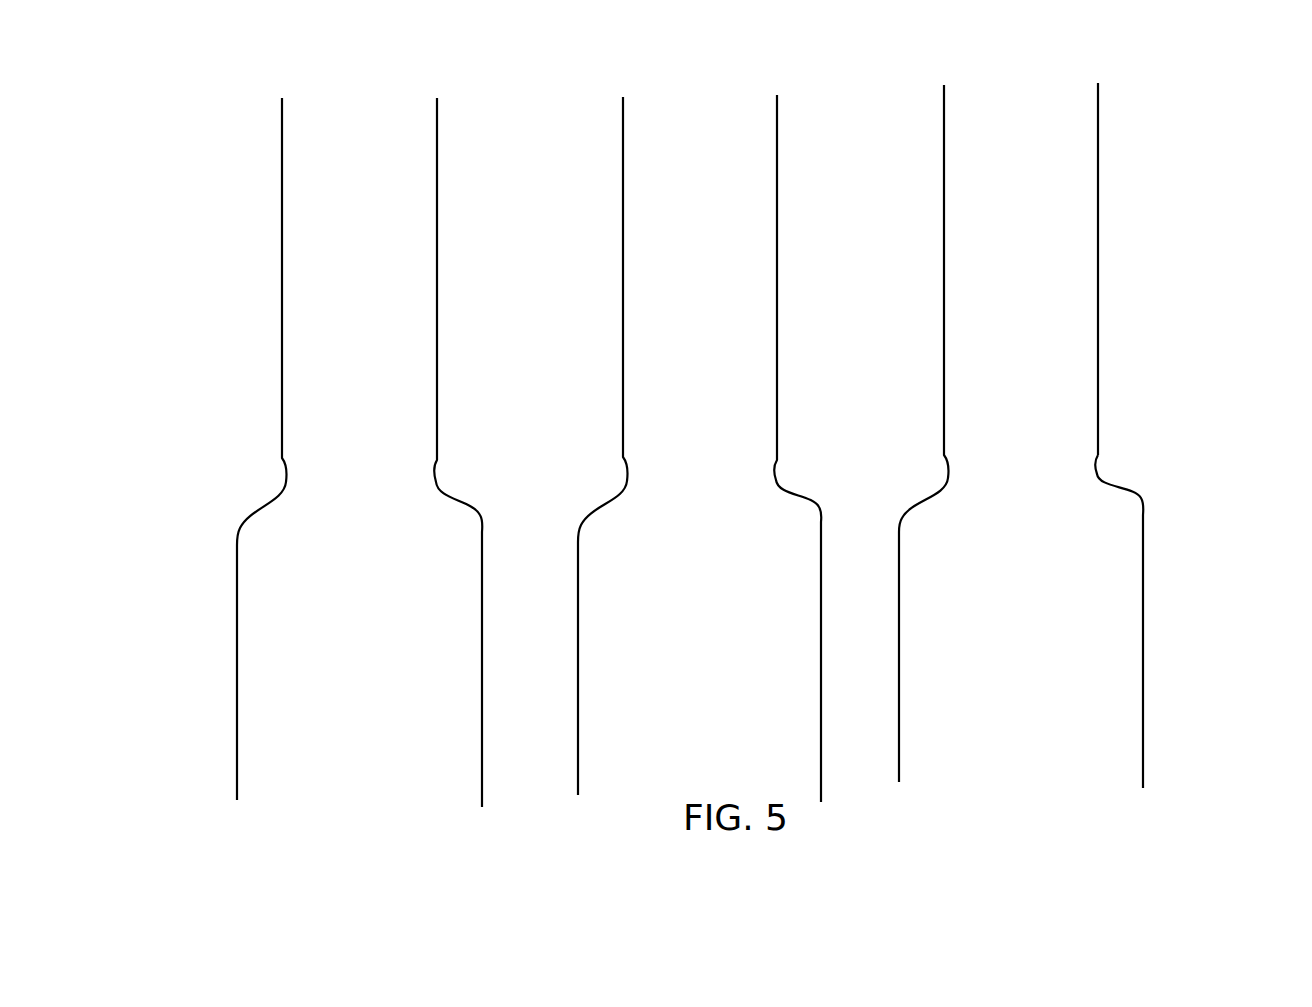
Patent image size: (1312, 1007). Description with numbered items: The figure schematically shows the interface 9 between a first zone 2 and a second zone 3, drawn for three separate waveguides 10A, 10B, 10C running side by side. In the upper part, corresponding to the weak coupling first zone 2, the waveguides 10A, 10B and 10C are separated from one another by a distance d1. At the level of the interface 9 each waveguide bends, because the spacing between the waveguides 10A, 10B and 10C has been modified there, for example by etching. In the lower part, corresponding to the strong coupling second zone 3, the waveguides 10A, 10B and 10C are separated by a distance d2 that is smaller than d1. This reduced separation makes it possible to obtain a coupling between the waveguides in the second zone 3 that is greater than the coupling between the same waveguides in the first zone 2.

The waveguide 10A is at (340, 237).
The waveguide 10B is at (660, 185).
The waveguide 10C is at (1072, 436).
The first zone 2 is at (1127, 113).
The interface 9 is at (1122, 470).
The second zone 3 is at (1173, 758).
The distance d1 is at (445, 217).
The distance d2 is at (489, 697).